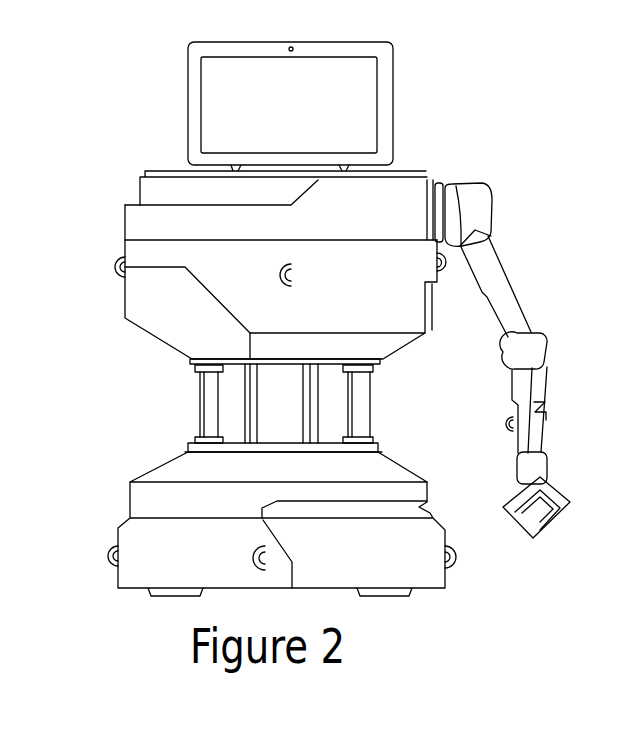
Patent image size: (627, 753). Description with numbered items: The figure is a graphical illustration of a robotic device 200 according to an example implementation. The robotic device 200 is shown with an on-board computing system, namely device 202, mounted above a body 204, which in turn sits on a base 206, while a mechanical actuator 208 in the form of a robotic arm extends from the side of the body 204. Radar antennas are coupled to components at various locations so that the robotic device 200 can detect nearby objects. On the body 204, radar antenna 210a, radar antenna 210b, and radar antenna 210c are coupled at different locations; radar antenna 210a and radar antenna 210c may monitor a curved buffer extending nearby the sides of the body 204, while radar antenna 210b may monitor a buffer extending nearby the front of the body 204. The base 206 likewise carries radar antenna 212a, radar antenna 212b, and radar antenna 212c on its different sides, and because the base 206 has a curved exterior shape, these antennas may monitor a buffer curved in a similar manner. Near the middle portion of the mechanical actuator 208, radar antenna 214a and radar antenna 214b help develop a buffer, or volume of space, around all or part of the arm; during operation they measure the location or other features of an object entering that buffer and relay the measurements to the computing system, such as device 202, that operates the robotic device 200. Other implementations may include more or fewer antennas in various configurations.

The robotic device 200 is at (92, 87).
The device 202 is at (398, 70).
The body 204 is at (124, 216).
The base 206 is at (130, 482).
The mechanical actuator 208 is at (505, 270).
The radar antenna 210a is at (115, 283).
The radar antenna 210b is at (294, 272).
The radar antenna 210c is at (446, 268).
The radar antenna 212a is at (110, 553).
The radar antenna 212b is at (250, 555).
The radar antenna 212c is at (459, 565).
The radar antenna 214a is at (505, 427).
The radar antenna 214b is at (552, 410).